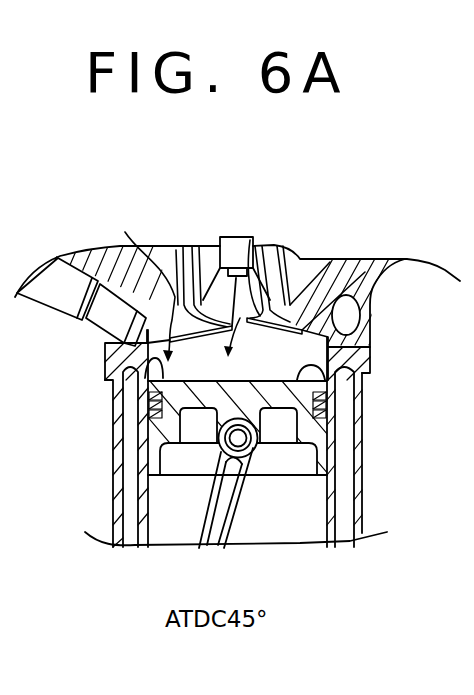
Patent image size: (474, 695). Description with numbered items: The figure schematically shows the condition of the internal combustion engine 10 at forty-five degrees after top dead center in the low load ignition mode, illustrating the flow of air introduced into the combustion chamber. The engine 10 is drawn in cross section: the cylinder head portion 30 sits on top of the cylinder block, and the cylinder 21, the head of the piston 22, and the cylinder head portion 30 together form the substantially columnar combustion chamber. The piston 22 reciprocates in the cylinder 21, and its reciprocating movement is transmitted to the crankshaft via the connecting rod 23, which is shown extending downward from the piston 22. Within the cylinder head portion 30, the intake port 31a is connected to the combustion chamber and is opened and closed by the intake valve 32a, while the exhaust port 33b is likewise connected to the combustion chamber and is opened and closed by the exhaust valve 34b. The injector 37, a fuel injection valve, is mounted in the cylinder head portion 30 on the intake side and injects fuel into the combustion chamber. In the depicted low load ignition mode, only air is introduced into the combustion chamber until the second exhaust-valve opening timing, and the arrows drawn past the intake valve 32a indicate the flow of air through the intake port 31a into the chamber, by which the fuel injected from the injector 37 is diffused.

The internal combustion engine 10 is at (55, 432).
The cylinder 21 is at (116, 371).
The piston 22 is at (357, 391).
The connecting rod 23 is at (236, 523).
The cylinder head portion 30 is at (395, 306).
The intake port 31a is at (178, 277).
The intake valve 32a is at (160, 280).
The exhaust port 33b is at (300, 277).
The exhaust valve 34b is at (347, 268).
The injector 37 is at (103, 325).